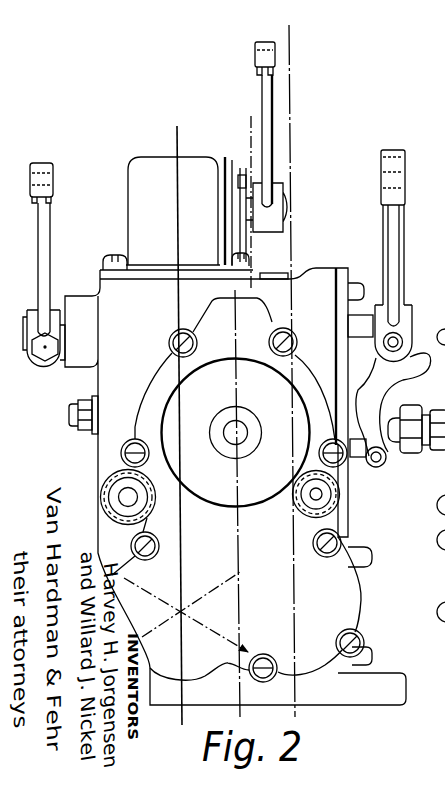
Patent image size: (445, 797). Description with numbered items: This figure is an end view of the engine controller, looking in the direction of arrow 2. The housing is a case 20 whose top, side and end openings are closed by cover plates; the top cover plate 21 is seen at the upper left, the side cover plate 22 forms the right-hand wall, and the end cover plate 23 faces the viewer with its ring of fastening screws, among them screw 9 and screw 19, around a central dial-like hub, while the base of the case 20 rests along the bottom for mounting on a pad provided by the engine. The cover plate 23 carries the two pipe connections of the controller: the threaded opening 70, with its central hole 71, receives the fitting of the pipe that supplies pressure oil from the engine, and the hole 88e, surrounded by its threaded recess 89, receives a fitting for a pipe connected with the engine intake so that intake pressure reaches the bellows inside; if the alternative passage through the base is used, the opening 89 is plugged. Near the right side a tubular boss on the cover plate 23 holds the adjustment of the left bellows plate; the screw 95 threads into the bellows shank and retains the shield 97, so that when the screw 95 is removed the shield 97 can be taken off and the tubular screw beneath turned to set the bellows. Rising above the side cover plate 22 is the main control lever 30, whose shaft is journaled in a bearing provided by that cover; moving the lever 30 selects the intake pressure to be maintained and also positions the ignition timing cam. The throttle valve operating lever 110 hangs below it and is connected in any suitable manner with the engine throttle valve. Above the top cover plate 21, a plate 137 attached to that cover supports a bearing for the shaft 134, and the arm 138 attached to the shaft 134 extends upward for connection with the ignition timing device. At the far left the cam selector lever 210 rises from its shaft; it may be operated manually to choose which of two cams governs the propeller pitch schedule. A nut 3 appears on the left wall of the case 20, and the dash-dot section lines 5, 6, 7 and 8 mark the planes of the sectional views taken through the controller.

The arrow 2 is at (444, 588).
The nut 3 is at (55, 413).
The section line 5- 5 is at (251, 116).
The section line 6- 6 is at (289, 25).
The section line 7- 7 is at (177, 126).
The section line 8- 8 is at (233, 577).
The cover screw 9 is at (118, 570).
The cover screw 19 is at (251, 658).
The case 20 is at (305, 277).
The cover plate 21 is at (129, 201).
The cover plate 22 is at (343, 268).
The cover plate 23 is at (351, 593).
The main control lever 30 is at (405, 155).
The threaded opening 70 is at (143, 510).
The shaft end 71 is at (136, 497).
The hole 88e is at (320, 494).
The threaded recess 89 is at (300, 501).
The screw 95 is at (389, 463).
The shield 97 is at (418, 418).
The throttle valve operating lever 110 is at (421, 346).
The shaft 134 is at (287, 208).
The plate 137 is at (240, 166).
The arm 138 is at (262, 87).
The cam selector lever 210 is at (50, 230).